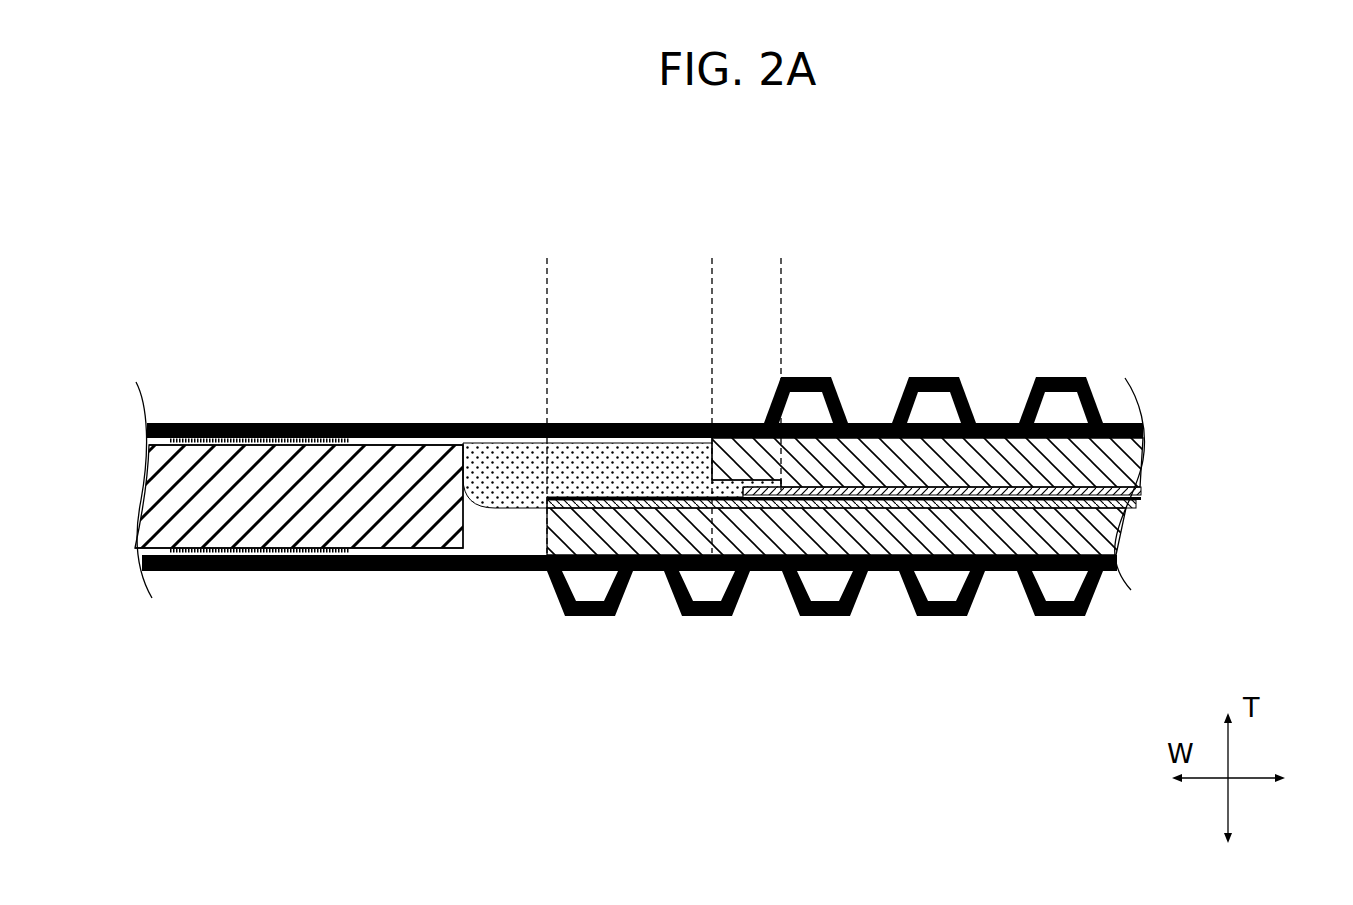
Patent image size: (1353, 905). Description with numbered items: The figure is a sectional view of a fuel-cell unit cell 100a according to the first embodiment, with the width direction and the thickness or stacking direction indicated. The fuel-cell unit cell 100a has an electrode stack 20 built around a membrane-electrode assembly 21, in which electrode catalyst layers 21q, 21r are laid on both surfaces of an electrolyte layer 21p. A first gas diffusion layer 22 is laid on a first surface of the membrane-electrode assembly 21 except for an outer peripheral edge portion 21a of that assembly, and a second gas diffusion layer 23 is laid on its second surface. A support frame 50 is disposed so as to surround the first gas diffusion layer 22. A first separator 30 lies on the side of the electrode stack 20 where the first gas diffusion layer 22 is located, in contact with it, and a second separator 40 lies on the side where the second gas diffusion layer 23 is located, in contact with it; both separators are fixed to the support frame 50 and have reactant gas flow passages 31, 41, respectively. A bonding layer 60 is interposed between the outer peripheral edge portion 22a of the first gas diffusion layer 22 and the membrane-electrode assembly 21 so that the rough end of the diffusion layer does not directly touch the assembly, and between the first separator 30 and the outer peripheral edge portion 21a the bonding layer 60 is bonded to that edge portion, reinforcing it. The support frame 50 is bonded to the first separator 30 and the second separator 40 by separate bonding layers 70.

The fuel-cell unit cell 100a is at (737, 455).
The electrode stack 20 is at (945, 484).
The membrane-electrode assembly 21 is at (914, 489).
The outer peripheral edge portion of the membrane-electrode assembly 21a is at (712, 311).
The electrolyte layer 21p is at (1130, 498).
The electrode catalyst layer 21q is at (1130, 463).
The electrode catalyst layer 21r is at (1127, 503).
The first gas diffusion layer 22 is at (1143, 452).
The outer peripheral edge portion of the first gas diffusion layer 22a is at (781, 311).
The second gas diffusion layer 23 is at (1117, 550).
The first separator 30 is at (645, 347).
The reactant gas flow passage 31 is at (933, 407).
The second separator 40 is at (629, 654).
The reactant gas flow passage 41 is at (825, 585).
The support frame 50 is at (160, 571).
The bonding layer 60 is at (498, 465).
The bonding layer 70 is at (223, 423).